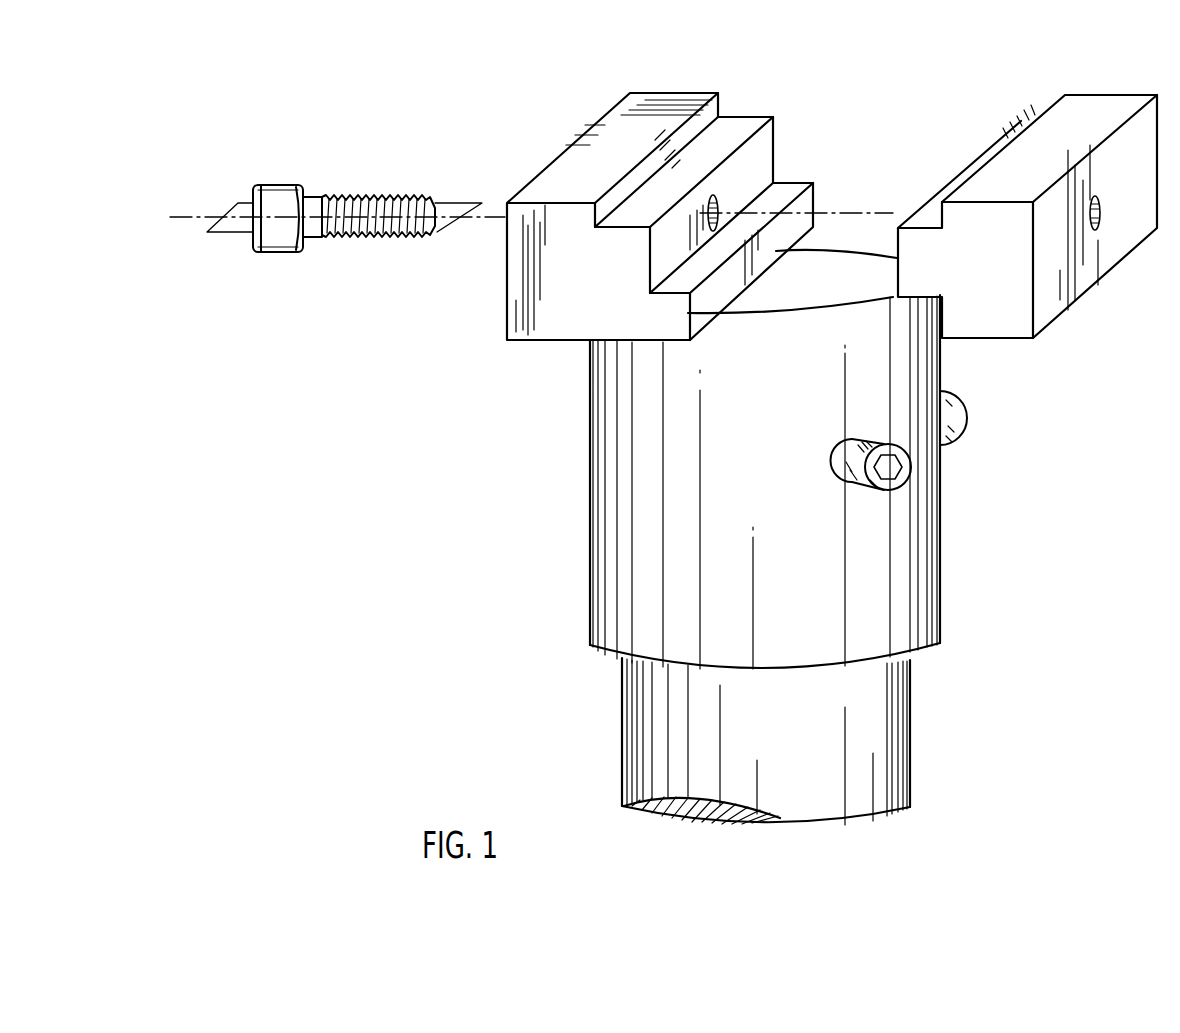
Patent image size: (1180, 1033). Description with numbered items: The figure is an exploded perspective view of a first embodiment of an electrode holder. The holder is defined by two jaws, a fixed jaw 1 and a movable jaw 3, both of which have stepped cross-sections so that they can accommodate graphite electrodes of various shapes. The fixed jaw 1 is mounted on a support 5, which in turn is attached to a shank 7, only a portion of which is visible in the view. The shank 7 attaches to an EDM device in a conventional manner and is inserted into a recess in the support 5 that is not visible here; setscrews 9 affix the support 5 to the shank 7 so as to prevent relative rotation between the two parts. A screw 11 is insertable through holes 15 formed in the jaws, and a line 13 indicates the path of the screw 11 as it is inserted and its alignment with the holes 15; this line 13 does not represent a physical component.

The fixed jaw 1 is at (676, 113).
The movable jaw 3 is at (1083, 112).
The support 5 is at (623, 399).
The shank 7 is at (636, 703).
The setscrews 9 is at (962, 404).
The screw 11 is at (373, 193).
The line 13 is at (497, 210).
The holes 15 is at (722, 202).